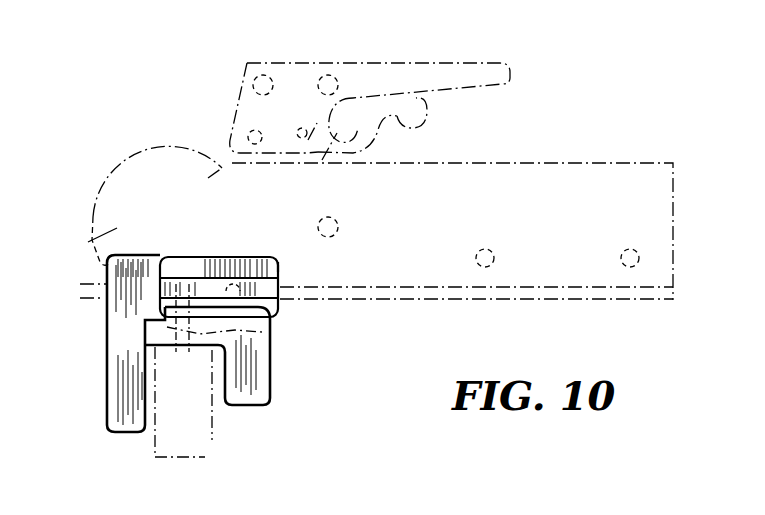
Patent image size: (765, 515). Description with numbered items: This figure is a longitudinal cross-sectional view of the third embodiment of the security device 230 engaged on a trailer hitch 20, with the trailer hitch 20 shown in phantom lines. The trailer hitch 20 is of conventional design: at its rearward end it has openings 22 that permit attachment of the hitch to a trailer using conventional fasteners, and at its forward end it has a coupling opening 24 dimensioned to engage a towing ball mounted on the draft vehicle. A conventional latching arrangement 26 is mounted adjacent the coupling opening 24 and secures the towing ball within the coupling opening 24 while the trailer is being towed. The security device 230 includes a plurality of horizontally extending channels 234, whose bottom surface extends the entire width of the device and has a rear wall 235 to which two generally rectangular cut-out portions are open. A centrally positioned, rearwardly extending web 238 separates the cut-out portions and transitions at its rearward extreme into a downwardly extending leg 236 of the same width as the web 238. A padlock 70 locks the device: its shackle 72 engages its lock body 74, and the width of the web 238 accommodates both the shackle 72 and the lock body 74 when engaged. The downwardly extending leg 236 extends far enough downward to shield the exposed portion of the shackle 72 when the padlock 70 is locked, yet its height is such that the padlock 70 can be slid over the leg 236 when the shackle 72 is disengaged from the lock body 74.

The trailer hitch 20 is at (108, 172).
The openings 22 is at (493, 250).
The coupling opening 24 is at (92, 239).
The latching arrangement 26 is at (397, 62).
The padlock 70 is at (242, 420).
The shackle 72 is at (262, 331).
The lock body 74 is at (212, 438).
The security device 230 is at (101, 358).
The horizontally extending channels 234 is at (247, 270).
The rear wall 235 is at (279, 266).
The downwardly extending leg 236 is at (245, 357).
The rearwardly extending web 238 is at (198, 313).